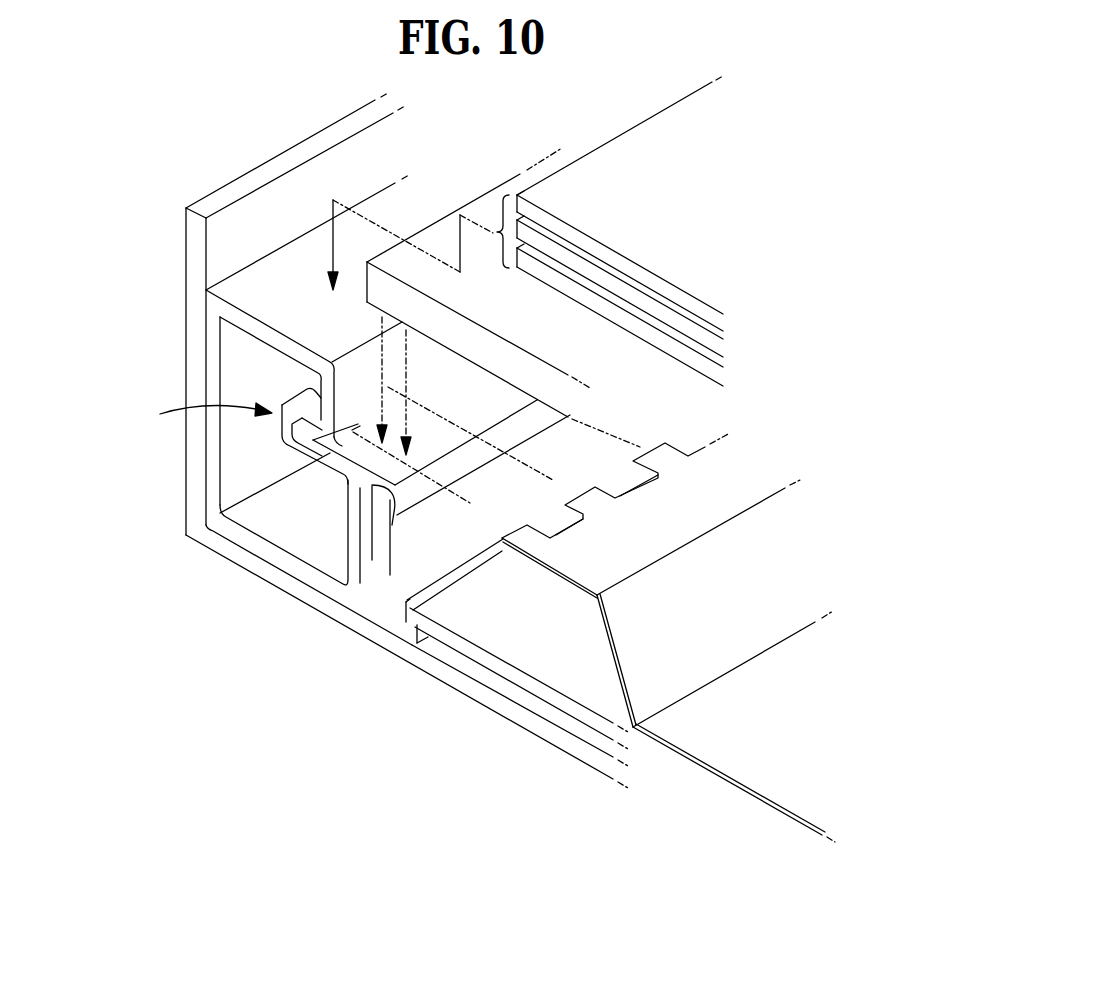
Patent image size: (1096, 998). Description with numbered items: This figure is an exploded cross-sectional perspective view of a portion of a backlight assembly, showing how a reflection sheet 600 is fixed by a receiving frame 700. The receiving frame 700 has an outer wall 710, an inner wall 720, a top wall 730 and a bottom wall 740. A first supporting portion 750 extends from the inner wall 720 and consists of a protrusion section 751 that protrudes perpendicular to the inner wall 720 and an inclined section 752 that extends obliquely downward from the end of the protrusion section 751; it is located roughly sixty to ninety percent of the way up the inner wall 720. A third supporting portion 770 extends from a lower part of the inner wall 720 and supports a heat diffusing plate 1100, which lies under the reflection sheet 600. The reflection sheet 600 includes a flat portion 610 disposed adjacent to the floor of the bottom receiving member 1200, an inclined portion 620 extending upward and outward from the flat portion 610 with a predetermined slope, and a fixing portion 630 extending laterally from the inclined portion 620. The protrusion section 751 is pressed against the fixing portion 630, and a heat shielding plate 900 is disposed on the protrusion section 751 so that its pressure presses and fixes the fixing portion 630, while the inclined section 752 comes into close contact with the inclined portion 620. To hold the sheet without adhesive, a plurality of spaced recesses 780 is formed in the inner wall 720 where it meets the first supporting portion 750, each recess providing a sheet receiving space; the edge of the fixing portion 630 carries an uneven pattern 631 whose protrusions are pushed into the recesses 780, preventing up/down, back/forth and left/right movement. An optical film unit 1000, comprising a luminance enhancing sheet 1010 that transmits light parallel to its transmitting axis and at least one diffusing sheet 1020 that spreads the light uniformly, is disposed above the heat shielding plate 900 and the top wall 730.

The reflection sheet 600 is at (838, 640).
The flat portion 610 is at (695, 752).
The inclined portion 620 is at (640, 680).
The fixing portion 630 is at (615, 572).
The uneven pattern 631 is at (607, 502).
The receiving frame 700 is at (352, 792).
The outer wall 710 is at (208, 474).
The inner wall 720 is at (350, 548).
The top wall 730 is at (262, 327).
The bottom wall 740 is at (262, 548).
The first supporting portion 750 is at (336, 700).
The protrusion section 751 is at (348, 608).
The inclined section 752 is at (385, 622).
The third supporting portion 770 is at (408, 633).
The recesses 780 is at (195, 410).
The heat shielding plate 900 is at (556, 380).
The optical film unit 1000 is at (842, 340).
The luminance enhancing sheet 1010 is at (727, 322).
The diffusing sheet 1020 is at (727, 346).
The heat diffusing plate 1100 is at (577, 707).
The bottom receiving member 1200 is at (480, 693).